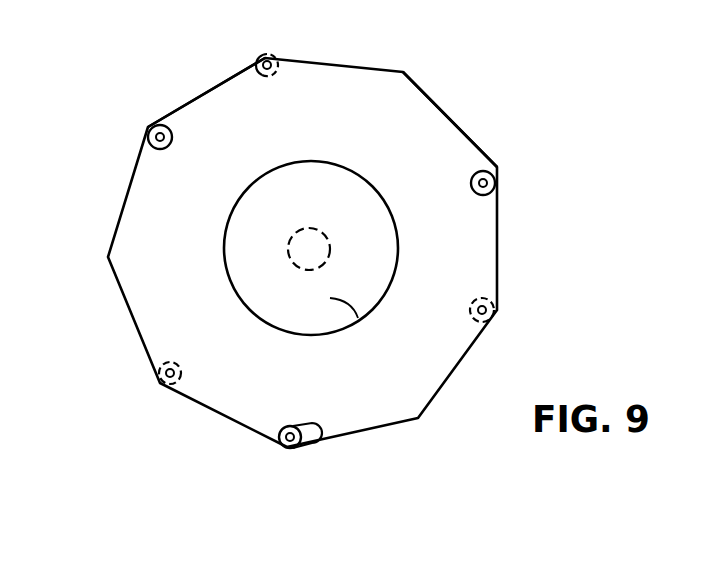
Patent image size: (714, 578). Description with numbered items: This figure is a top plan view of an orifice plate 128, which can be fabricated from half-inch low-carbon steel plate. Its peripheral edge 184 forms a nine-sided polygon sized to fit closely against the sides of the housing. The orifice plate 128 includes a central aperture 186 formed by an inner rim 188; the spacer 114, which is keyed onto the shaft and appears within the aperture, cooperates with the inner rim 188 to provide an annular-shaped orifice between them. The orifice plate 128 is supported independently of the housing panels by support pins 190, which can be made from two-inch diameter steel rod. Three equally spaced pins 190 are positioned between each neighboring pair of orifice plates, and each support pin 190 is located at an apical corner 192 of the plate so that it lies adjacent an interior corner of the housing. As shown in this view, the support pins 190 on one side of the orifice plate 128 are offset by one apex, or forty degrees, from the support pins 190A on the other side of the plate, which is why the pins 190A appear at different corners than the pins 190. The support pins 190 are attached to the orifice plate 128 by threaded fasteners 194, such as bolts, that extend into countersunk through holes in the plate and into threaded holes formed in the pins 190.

The spacer 114 is at (337, 235).
The orifice plate 128 is at (434, 125).
The peripheral edge 184 is at (497, 235).
The central aperture 186 is at (232, 243).
The inner rim 188 is at (322, 303).
The support pin 190 is at (148, 152).
The support pin 190A is at (478, 290).
The apical corner 192 is at (266, 56).
The threaded fastener 194 is at (266, 64).